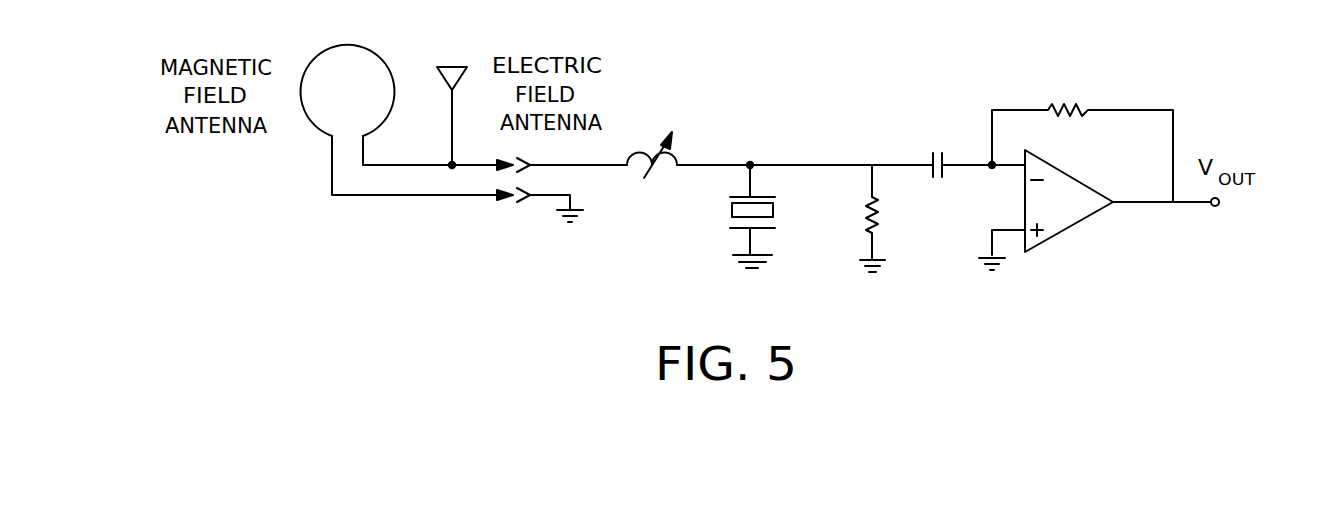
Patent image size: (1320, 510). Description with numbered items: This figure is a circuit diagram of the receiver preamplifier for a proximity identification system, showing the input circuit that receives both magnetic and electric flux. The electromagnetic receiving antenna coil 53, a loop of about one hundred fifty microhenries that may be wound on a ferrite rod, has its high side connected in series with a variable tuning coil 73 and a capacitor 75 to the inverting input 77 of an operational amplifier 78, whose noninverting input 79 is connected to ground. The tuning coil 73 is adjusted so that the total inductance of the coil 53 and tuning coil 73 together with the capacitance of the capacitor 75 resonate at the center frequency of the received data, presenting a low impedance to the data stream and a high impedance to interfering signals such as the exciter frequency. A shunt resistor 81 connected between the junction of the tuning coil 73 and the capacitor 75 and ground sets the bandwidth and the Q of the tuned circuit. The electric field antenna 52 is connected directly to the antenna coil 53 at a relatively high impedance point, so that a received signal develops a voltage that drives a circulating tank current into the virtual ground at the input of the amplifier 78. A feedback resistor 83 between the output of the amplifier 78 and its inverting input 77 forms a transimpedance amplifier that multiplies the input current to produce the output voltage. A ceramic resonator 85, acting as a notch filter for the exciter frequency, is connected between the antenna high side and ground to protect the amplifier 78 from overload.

The electric field antenna 52 is at (452, 137).
The electromagnetic receiving antenna coil 53 is at (325, 142).
The tuning coil 73 is at (634, 152).
The capacitor 75 is at (945, 157).
The inverting input 77 is at (1012, 162).
The operational amplifier 78 is at (1060, 167).
The noninverting input 79 is at (1010, 233).
The shunt resistor 81 is at (862, 219).
The feedback resistor 83 is at (1068, 105).
The ceramic resonator 85 is at (730, 207).